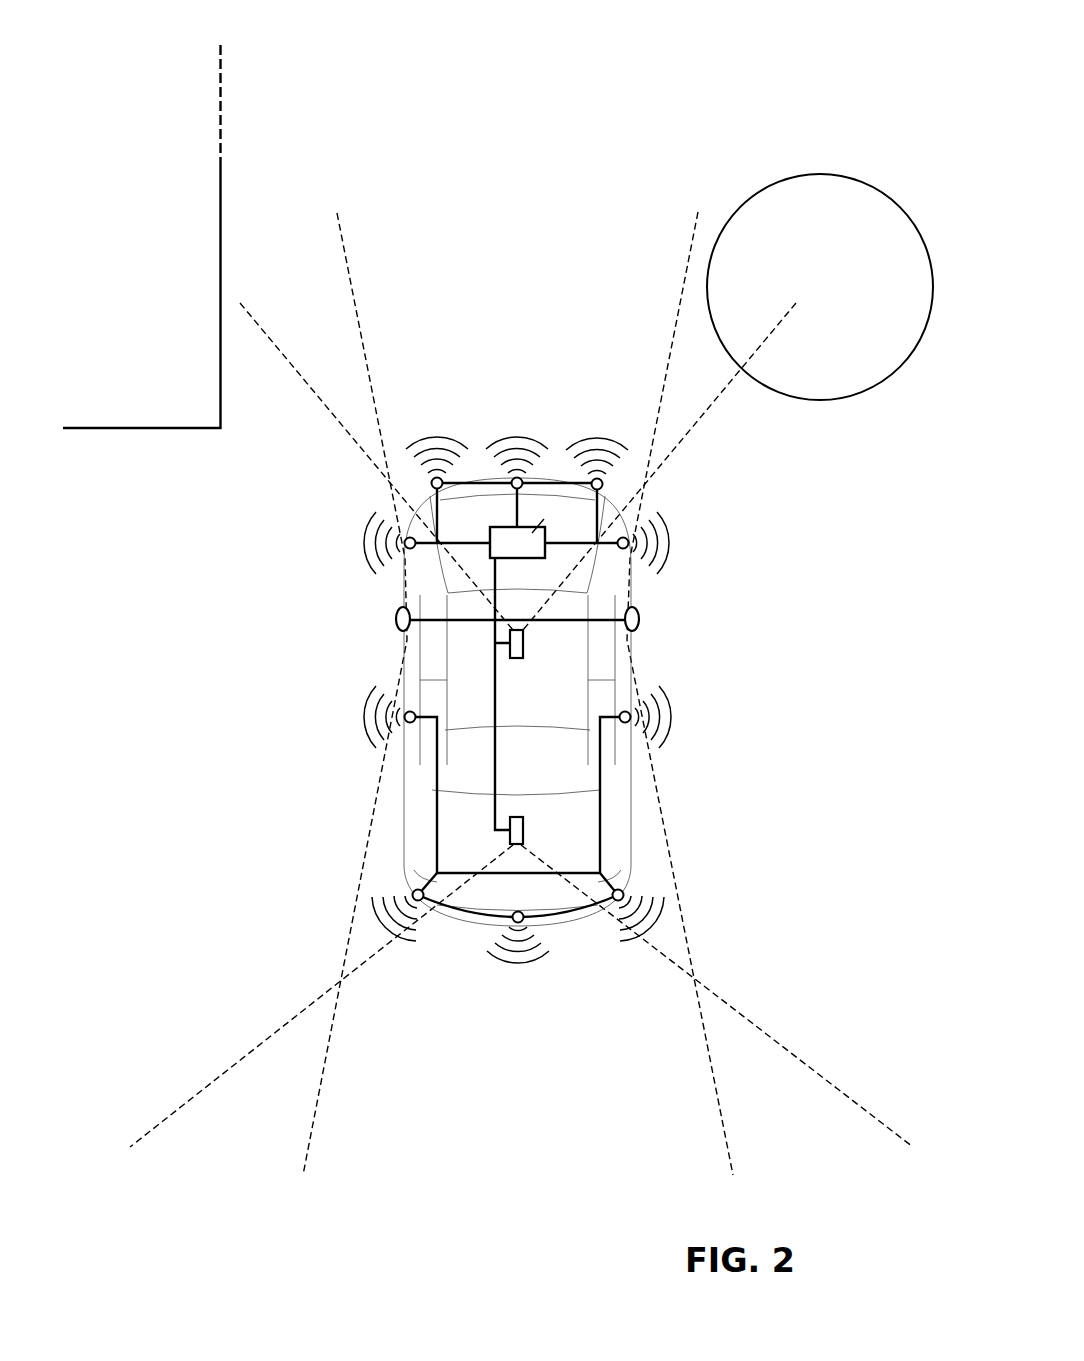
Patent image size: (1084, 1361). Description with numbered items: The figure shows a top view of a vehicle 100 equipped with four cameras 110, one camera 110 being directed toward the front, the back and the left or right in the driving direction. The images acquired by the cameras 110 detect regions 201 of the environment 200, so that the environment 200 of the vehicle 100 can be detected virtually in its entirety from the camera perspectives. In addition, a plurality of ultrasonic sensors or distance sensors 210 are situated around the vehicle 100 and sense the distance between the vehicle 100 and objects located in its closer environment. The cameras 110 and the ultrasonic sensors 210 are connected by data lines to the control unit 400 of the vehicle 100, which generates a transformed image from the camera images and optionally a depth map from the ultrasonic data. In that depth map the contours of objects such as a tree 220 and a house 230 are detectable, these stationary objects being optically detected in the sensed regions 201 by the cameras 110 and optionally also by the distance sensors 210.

The vehicle 100 is at (415, 853).
The camera 110 is at (398, 620).
The environment 200 is at (545, 109).
The region 201 is at (545, 248).
The ultrasonic sensor 210 is at (438, 478).
The tree 220 is at (807, 207).
The house 230 is at (197, 157).
The control unit 400 is at (533, 550).